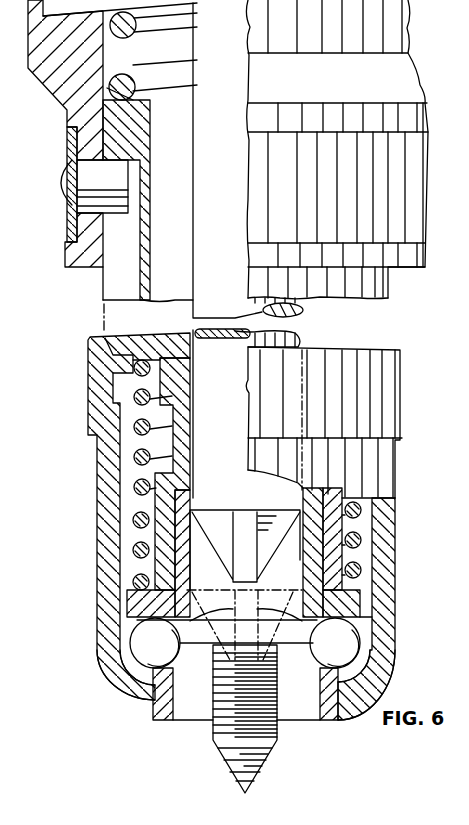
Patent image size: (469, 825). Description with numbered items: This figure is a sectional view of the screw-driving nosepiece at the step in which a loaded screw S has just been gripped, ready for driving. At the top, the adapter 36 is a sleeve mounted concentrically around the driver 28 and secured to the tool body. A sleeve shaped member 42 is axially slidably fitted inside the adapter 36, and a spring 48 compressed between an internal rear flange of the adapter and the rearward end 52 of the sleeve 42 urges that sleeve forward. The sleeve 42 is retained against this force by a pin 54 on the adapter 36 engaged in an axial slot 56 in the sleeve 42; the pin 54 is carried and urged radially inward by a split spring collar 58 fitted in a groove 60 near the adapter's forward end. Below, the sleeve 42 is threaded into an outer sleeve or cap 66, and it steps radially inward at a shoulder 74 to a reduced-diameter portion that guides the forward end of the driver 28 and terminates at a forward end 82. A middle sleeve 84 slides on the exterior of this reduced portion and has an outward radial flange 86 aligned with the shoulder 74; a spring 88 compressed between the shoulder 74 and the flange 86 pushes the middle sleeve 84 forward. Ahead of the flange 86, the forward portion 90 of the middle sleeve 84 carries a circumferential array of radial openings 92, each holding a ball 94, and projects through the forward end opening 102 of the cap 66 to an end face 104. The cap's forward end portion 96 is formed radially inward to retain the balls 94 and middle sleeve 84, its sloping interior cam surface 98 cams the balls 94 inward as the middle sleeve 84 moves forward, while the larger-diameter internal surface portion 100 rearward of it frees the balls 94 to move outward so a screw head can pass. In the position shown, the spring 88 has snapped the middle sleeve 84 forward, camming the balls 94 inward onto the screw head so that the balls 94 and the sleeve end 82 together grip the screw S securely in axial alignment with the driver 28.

The driver 28 is at (237, 175).
The adapter 36 is at (50, 76).
The sleeve shaped member 42 is at (386, 300).
The spring 48 is at (173, 23).
The rearward end of sleeve 52 is at (140, 95).
The pin 54 is at (85, 205).
The axial slot 56 is at (115, 285).
The split spring collar 58 is at (64, 162).
The groove 60 is at (68, 135).
The outer sleeve or cap 66 is at (92, 398).
The shoulder 74 is at (126, 360).
The forward end of sleeve 82 is at (352, 566).
The middle sleeve 84 is at (153, 537).
The outward radial flange 86 is at (133, 600).
The spring 88 is at (124, 362).
The forward portion of middle sleeve 90 is at (157, 708).
The radial openings 92 is at (133, 643).
The ball 94 is at (140, 640).
The forward end portion of outer cap 96 is at (132, 697).
The cam surface 98 is at (148, 682).
The internal surface portion 100 is at (372, 617).
The forward end opening 102 is at (323, 700).
The end face 104 is at (182, 718).
The spray tip S is at (225, 762).